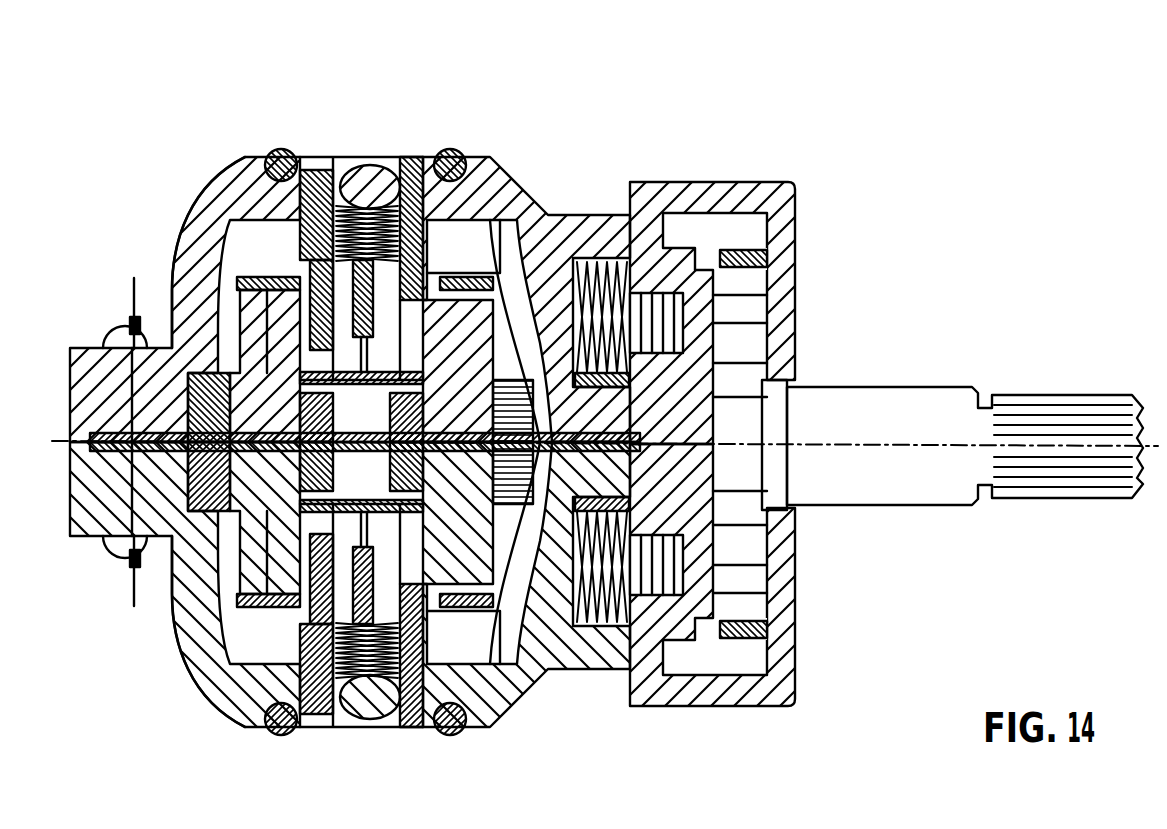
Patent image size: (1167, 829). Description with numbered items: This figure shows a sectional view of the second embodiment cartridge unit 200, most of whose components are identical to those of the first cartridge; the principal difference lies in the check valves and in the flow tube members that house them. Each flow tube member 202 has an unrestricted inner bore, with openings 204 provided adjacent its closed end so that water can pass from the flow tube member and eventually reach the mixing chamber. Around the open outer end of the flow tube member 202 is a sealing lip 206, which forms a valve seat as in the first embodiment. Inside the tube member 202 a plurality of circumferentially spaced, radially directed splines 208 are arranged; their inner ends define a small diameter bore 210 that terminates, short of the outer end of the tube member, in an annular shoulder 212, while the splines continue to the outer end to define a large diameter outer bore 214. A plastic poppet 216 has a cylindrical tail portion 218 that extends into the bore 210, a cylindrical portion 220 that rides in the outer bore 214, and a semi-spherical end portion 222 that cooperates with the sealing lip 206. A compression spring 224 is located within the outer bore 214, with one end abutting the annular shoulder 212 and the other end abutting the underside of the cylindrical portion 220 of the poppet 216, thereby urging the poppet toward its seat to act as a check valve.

The cartridge unit 200 is at (852, 161).
The flow tube member 202 is at (542, 215).
The openings 204 is at (673, 197).
The sealing lip 206 is at (410, 170).
The splines 208 is at (172, 312).
The bore 210 is at (350, 300).
The annular shoulder 212 is at (258, 202).
The outer bore 214 is at (230, 188).
The poppet 216 is at (377, 148).
The cylindrical tail portion 218 is at (356, 262).
The cylindrical portion 220 is at (247, 156).
The semi-spherical end portion 222 is at (378, 165).
The compression spring 224 is at (334, 168).